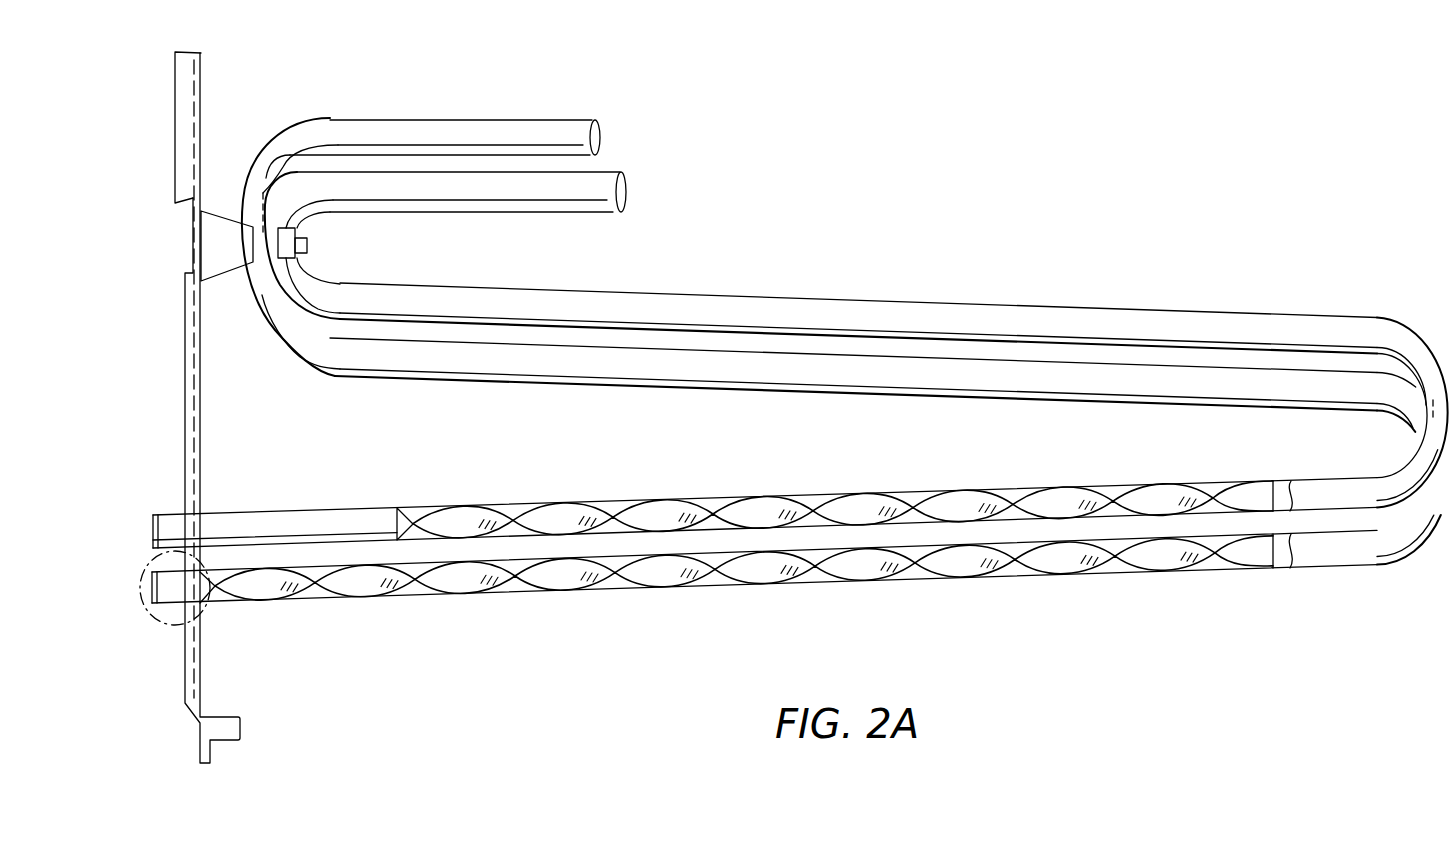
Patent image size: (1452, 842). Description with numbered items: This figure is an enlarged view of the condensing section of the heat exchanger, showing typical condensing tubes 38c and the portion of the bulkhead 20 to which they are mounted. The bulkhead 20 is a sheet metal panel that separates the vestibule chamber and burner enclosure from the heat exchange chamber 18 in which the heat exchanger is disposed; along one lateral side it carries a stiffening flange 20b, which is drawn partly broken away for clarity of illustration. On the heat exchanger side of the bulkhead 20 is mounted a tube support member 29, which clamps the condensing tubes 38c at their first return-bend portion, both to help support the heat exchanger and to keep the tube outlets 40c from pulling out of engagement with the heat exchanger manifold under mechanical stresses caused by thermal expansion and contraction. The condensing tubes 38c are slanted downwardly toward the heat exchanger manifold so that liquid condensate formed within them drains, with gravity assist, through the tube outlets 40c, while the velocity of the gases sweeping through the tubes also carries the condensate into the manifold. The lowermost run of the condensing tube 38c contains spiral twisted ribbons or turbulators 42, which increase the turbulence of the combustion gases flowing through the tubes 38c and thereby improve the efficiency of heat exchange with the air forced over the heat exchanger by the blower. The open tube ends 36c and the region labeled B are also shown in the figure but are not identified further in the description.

The heat exchange chamber 18 is at (1063, 279).
The bulkhead 20 is at (182, 244).
The stiffening flange 20b is at (183, 98).
The tube support member 29 is at (220, 242).
The tube inlet ends 36c is at (457, 187).
The condensing tubes 38c is at (797, 368).
The tube outlets 40c is at (142, 588).
The turbulators 42 is at (650, 518).
The detail view region B is at (153, 638).